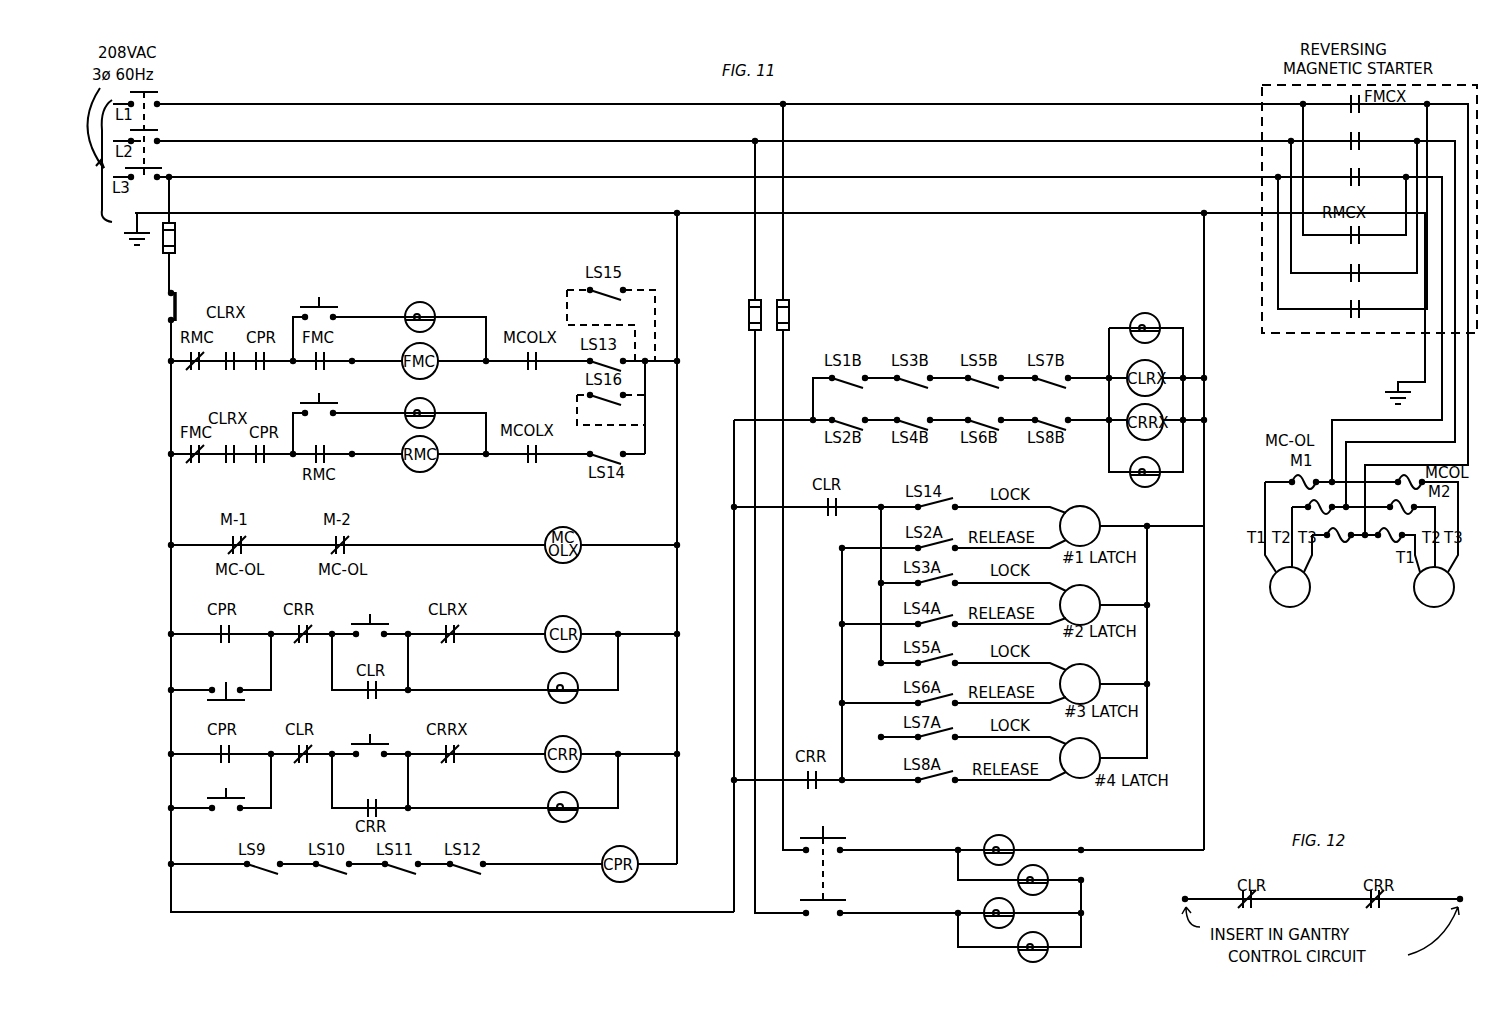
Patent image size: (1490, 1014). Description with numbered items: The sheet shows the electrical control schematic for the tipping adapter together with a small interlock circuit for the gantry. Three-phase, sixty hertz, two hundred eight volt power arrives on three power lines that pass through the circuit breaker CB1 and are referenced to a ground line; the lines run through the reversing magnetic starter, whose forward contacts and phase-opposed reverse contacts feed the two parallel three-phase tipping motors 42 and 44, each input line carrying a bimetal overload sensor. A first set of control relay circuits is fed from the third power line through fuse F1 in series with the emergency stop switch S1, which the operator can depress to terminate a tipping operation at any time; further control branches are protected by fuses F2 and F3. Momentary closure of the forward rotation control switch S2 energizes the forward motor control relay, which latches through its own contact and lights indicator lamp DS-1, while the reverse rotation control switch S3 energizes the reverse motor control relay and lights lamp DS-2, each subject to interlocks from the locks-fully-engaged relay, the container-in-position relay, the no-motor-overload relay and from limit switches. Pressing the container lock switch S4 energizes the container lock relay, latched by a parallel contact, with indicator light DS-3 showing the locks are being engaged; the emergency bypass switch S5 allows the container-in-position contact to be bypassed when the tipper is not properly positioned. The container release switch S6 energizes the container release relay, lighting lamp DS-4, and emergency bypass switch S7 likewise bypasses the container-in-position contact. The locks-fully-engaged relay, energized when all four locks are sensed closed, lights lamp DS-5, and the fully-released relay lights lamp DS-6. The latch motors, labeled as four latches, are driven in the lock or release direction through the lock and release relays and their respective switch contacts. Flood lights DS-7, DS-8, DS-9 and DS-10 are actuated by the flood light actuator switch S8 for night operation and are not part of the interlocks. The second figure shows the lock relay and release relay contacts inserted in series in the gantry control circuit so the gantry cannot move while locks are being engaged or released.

The tipping motor 42 is at (1298, 606).
The tipping motor 44 is at (1425, 606).
The fuse F1 is at (181, 243).
The fuse F2 is at (762, 332).
The fuse F3 is at (790, 332).
The circuit breaker CB1 is at (141, 144).
The emergency stop switch S1 is at (164, 306).
The forward rotation control switch S2 is at (325, 302).
The reverse rotation control switch S3 is at (319, 410).
The container lock switch S4 is at (370, 635).
The emergency bypass switch S5 is at (226, 679).
The container release switch S6 is at (370, 755).
The emergency bypass switch S7 is at (226, 811).
The flood light actuator switch S8 is at (823, 884).
The indicator lamp DS-1 is at (436, 312).
The indicator lamp DS-2 is at (436, 408).
The indicator light DS-3 is at (574, 700).
The indicator lamp DS-4 is at (574, 818).
The indicator lamp DS-5 is at (1148, 310).
The indicator lamp DS-6 is at (1140, 488).
The flood light DS-7 is at (1032, 822).
The flood light DS-8 is at (1045, 880).
The flood light DS-9 is at (985, 900).
The flood light DS-10 is at (1045, 952).